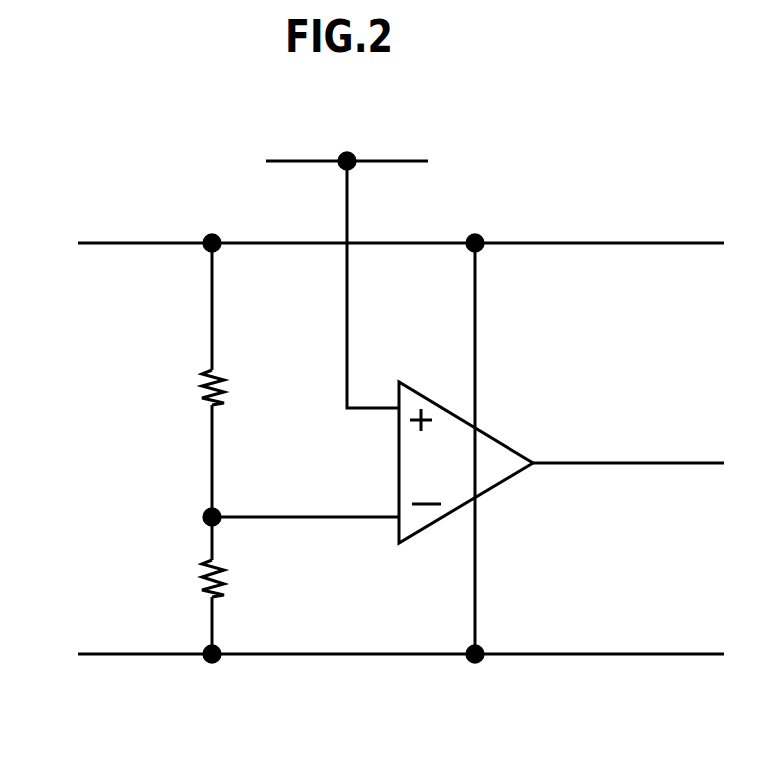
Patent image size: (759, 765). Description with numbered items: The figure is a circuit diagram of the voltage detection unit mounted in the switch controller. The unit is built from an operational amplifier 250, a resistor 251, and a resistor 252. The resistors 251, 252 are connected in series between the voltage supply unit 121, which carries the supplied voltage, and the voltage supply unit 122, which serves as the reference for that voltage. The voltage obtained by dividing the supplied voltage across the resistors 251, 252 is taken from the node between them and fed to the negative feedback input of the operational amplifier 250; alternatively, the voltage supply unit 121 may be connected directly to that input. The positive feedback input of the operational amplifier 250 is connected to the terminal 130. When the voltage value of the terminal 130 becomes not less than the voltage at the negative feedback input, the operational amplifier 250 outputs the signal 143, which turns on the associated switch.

The voltage supply unit 121 is at (120, 243).
The voltage supply unit 122 is at (320, 654).
The terminal 130 is at (347, 161).
The signal 143 is at (622, 463).
The operational amplifier 250 is at (517, 450).
The resistor 251 is at (200, 394).
The resistor 252 is at (200, 586).